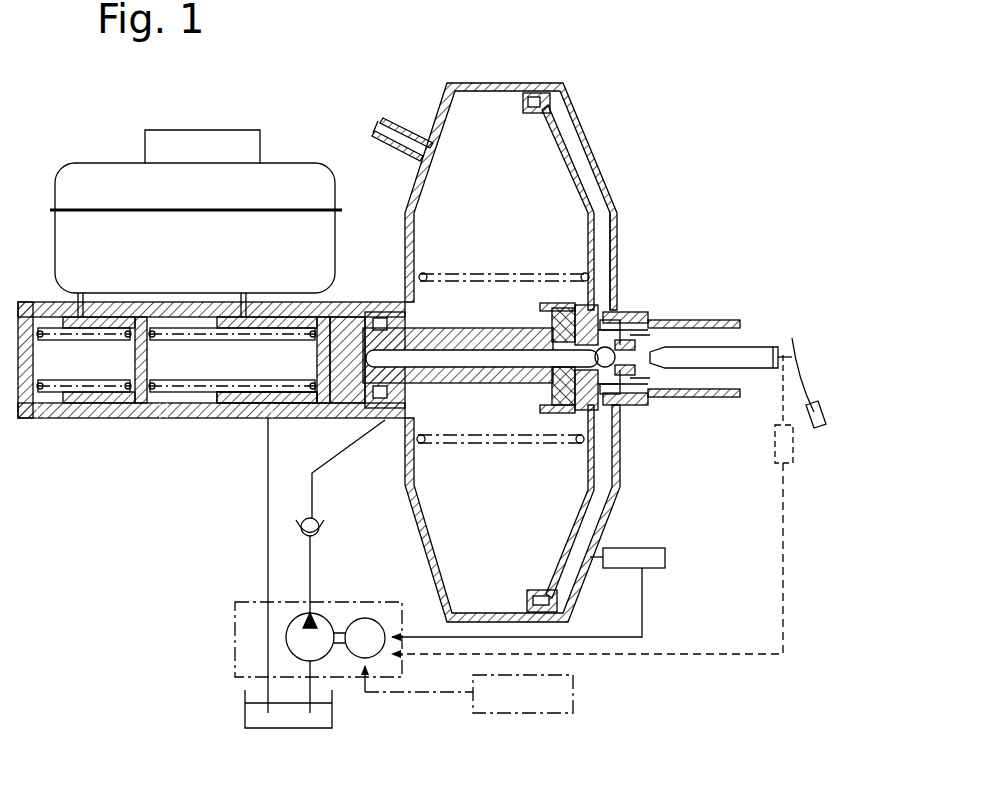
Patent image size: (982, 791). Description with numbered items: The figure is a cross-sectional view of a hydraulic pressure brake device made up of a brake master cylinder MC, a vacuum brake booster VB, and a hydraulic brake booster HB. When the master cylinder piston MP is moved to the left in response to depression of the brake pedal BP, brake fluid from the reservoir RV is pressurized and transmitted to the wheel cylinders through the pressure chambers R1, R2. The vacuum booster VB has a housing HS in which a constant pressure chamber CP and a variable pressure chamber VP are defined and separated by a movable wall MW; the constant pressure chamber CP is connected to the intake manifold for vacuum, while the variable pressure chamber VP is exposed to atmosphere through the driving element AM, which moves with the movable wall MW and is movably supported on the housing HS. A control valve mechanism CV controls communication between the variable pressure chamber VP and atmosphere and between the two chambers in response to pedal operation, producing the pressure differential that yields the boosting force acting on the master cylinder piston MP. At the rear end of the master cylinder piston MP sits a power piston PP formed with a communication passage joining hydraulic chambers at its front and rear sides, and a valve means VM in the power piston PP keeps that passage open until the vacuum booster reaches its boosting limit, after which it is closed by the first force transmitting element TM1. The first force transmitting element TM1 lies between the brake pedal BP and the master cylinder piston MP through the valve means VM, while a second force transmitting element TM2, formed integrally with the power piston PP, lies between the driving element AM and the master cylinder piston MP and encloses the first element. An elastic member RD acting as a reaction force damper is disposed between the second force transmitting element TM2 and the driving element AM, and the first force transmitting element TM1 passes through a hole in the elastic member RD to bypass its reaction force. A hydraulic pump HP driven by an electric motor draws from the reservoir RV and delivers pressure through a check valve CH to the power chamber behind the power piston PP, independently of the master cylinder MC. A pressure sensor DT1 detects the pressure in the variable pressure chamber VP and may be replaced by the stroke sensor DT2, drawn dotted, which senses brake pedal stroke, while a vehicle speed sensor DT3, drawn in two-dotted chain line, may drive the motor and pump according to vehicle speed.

The reservoir RV is at (282, 178).
The brake master cylinder MC is at (117, 422).
The pressure chamber R1 is at (62, 360).
The pressure chamber R2 is at (217, 358).
The master cylinder piston MP is at (243, 400).
The power piston PP is at (367, 337).
The hydraulic brake booster HB is at (388, 287).
The housing HS is at (570, 93).
The constant pressure chamber CP is at (463, 143).
The movable wall MW is at (560, 143).
The variable pressure chamber VP is at (594, 203).
The first force transmitting element TM1 is at (490, 356).
The second force transmitting element TM2 is at (462, 330).
The elastic member RD is at (543, 403).
The vacuum brake booster VB is at (633, 302).
The control valve mechanism CV is at (652, 338).
The driving element AM is at (677, 393).
The brake pedal BP is at (805, 383).
The valve means VM is at (348, 405).
The check valve CH is at (323, 520).
The hydraulic pump HP is at (323, 613).
The pressure sensor DT1 is at (668, 557).
The stroke sensor DT2 is at (775, 455).
The vehicle speed sensor DT3 is at (573, 697).